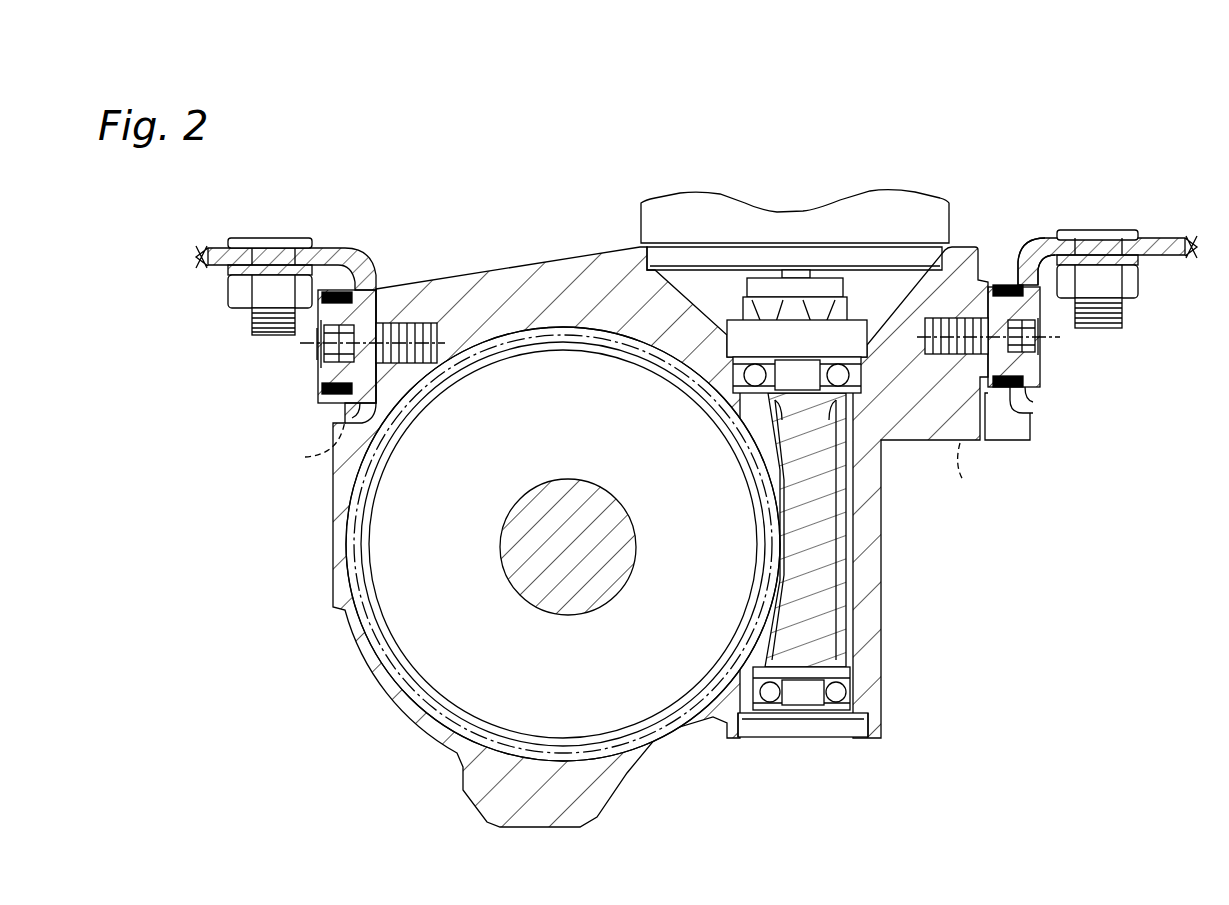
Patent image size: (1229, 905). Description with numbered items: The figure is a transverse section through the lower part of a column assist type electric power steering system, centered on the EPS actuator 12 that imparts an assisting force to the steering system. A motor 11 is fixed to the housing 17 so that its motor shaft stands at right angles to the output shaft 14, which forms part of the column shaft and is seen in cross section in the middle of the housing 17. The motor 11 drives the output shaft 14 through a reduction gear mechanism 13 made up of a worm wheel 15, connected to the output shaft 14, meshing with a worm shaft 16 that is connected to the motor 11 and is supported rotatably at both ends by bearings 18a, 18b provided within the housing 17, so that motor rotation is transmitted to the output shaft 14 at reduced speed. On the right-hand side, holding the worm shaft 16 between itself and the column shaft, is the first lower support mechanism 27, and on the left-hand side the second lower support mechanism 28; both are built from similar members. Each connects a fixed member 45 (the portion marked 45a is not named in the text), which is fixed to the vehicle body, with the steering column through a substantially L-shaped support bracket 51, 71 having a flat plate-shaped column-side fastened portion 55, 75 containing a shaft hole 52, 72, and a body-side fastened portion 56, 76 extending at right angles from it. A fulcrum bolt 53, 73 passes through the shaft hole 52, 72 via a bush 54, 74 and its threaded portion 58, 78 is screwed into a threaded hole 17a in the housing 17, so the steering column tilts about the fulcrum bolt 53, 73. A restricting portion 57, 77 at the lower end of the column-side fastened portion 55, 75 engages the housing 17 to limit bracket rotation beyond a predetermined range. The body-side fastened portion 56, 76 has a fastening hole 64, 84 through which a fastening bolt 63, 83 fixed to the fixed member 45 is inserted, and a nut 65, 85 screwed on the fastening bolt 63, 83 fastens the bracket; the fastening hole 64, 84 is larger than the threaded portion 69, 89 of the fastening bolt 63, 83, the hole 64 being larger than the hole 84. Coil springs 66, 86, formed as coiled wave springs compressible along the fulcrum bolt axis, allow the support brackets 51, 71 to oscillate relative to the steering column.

The motor 11 is at (667, 210).
The EPS actuator 12 is at (987, 178).
The reduction gear mechanism 13 is at (801, 777).
The output shaft 14 is at (628, 516).
The worm wheel 15 is at (675, 697).
The worm shaft 16 is at (800, 670).
The housing 17 is at (548, 276).
The threaded hole 17a is at (420, 363).
The bearing 18a is at (733, 370).
The bearing 18b is at (757, 683).
The first lower support mechanism 27 is at (1097, 450).
The second lower support mechanism 28 is at (243, 406).
The fixed member 45 is at (222, 248).
The frame mounting portion 45a is at (212, 235).
The support bracket 51 is at (1033, 257).
The shaft hole 52 is at (1040, 380).
The fulcrum bolt 53 is at (1040, 340).
The bush 54 is at (1022, 440).
The column-side fastened portion 55 is at (1033, 405).
The body-side fastened portion 56 is at (1139, 260).
The restricting portion 57 is at (967, 476).
The threaded portion 58 is at (980, 320).
The fastening bolt 63 is at (1098, 230).
The fastening hole 64 is at (1139, 270).
The nut 65 is at (1095, 314).
The coil spring 66 is at (1003, 285).
The threaded portion 69 is at (1092, 332).
The support bracket 71 is at (356, 264).
The shaft hole 72 is at (322, 388).
The fulcrum bolt 73 is at (324, 345).
The bush 74 is at (377, 290).
The column-side fastened portion 75 is at (355, 410).
The body-side fastened portion 76 is at (229, 270).
The restricting portion 77 is at (313, 444).
The threaded portion 78 is at (405, 323).
The fastening bolt 83 is at (267, 238).
The fastening hole 84 is at (246, 290).
The nut 85 is at (263, 318).
The coil spring 86 is at (333, 292).
The threaded portion 89 is at (300, 343).